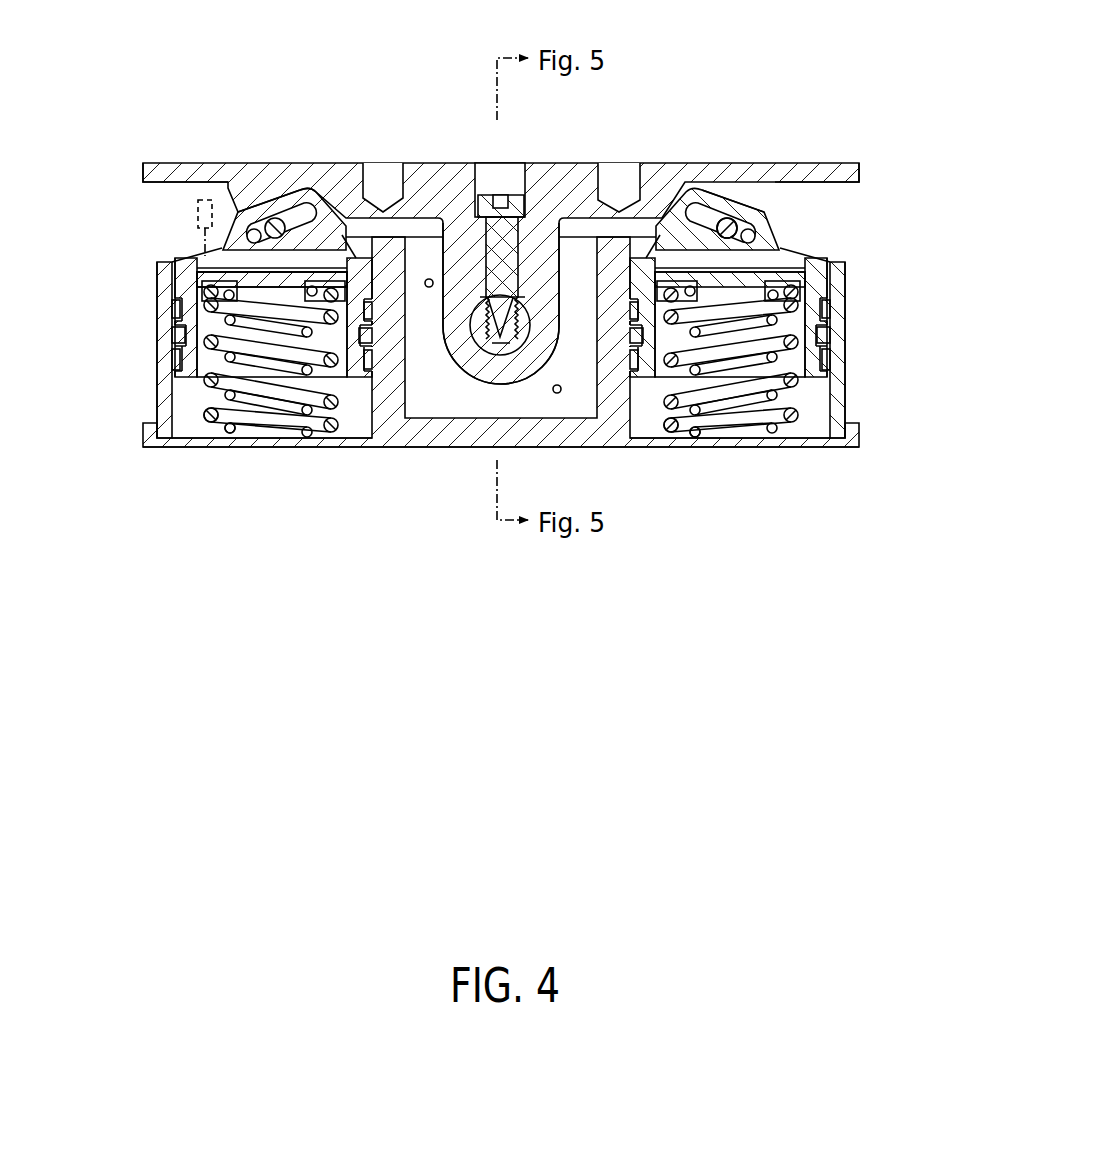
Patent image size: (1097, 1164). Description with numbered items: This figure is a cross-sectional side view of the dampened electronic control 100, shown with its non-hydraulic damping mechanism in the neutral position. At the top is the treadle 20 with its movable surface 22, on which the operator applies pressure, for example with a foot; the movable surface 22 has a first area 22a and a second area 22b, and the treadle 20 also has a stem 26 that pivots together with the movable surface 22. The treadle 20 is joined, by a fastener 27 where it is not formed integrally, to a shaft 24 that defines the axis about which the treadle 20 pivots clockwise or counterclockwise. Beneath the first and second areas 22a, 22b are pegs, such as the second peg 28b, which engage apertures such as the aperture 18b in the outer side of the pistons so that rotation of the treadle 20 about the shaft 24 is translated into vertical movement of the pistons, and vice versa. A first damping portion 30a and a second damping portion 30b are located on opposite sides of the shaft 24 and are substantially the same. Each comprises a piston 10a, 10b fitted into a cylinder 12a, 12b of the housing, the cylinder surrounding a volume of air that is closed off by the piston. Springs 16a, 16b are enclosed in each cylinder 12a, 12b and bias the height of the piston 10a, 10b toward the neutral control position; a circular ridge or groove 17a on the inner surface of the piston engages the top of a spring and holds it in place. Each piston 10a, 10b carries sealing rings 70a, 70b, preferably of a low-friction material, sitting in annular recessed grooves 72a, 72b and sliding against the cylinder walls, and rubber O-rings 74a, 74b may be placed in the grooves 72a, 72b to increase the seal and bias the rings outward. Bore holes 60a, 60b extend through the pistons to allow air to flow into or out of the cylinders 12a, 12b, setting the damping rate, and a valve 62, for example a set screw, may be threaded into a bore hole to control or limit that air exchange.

The dampened electronic control 100 is at (728, 62).
The treadle 20 is at (660, 182).
The movable surface 22 is at (433, 158).
The first area of the movable surface 22a is at (143, 158).
The second area of the movable surface 22b is at (869, 155).
The shaft 24 is at (517, 332).
The stem 26 is at (530, 262).
The fastener 27 is at (512, 195).
The second peg 28b is at (725, 230).
The aperture 18b is at (800, 250).
The bore hole 60a is at (196, 246).
The bore hole 60b is at (810, 246).
The valve 62 is at (198, 217).
The circular ridge or groove 17a is at (200, 293).
The sealing ring 70a is at (172, 310).
The sealing ring 70b is at (830, 312).
The recessed groove 72a is at (163, 367).
The recessed groove 72b is at (838, 298).
The O-ring 74a is at (172, 338).
The O-ring 74b is at (825, 336).
The piston 10a is at (190, 375).
The piston 10b is at (800, 378).
The cylinder 12a is at (185, 425).
The cylinder 12b is at (818, 425).
The spring 16a is at (231, 436).
The spring 16b is at (672, 434).
The first damping portion 30a is at (280, 472).
The second damping portion 30b is at (748, 482).